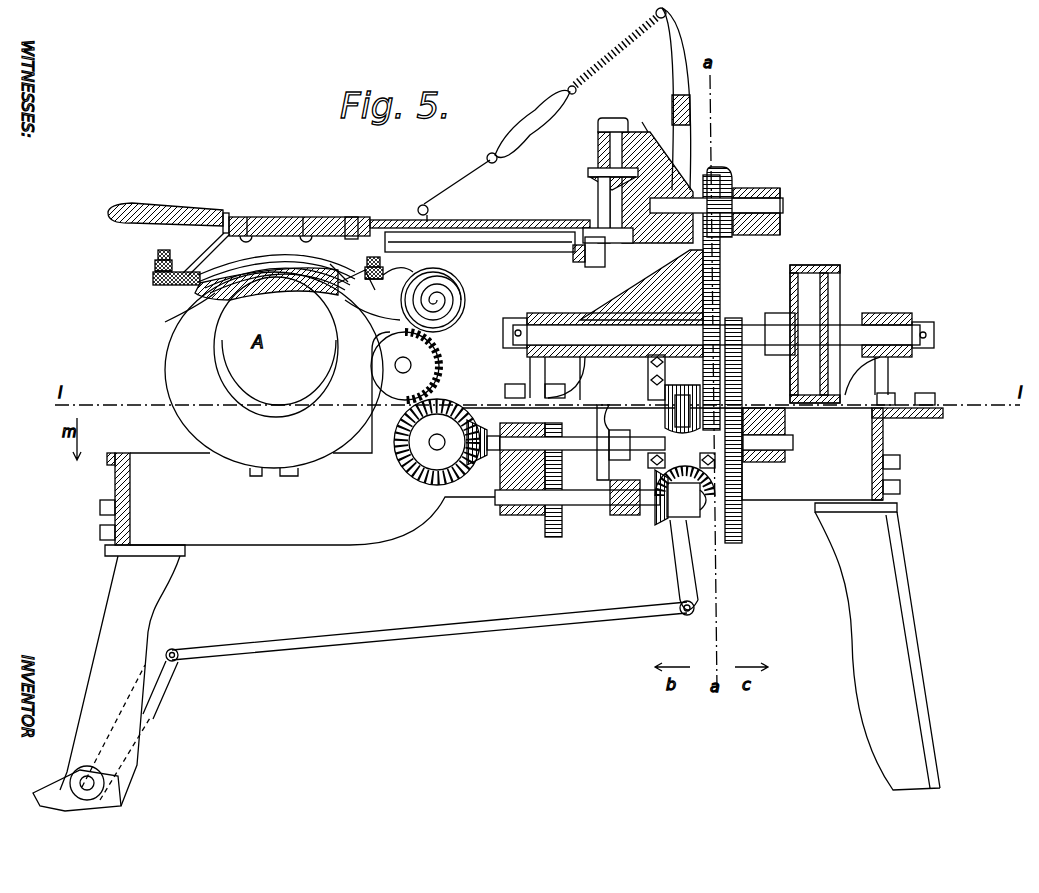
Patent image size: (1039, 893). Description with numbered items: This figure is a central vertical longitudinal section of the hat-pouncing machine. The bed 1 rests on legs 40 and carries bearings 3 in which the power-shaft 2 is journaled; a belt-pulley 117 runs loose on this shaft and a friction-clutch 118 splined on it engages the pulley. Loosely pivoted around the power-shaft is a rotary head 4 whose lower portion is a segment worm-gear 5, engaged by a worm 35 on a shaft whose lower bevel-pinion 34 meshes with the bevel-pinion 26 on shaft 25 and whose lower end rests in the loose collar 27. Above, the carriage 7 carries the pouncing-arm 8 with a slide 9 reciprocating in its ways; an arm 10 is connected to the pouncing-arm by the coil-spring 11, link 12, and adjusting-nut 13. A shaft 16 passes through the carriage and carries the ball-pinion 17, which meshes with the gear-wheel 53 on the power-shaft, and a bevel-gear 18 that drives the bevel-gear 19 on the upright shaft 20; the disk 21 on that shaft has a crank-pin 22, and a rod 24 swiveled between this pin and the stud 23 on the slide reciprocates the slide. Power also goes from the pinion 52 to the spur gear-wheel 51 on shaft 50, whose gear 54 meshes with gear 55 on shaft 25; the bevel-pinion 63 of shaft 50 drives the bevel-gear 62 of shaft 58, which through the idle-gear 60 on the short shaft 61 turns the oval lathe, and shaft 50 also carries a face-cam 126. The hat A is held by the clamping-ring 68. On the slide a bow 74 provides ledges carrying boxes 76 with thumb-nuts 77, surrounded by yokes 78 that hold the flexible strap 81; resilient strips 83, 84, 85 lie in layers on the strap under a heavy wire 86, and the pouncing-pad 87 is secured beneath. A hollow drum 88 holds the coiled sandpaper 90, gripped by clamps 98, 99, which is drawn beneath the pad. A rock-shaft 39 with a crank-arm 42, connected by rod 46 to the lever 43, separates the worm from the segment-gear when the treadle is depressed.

The bed 1 is at (521, 475).
The power-shaft 2 is at (716, 334).
The bearings 3 is at (880, 318).
The rotary head 4 is at (612, 300).
The segment worm-gear 5 is at (650, 392).
The carriage 7 is at (633, 128).
The pouncing-arm 8 is at (352, 218).
The slide 9 is at (255, 218).
The arm 10 is at (690, 52).
The coil-spring 11 is at (608, 53).
The link 12 is at (455, 187).
The adjusting-nut 13 is at (545, 108).
The shaft 16 is at (752, 198).
The ball-pinion 17 is at (715, 167).
The bevel-gear 18 is at (655, 160).
The bevel-gear 19 is at (590, 168).
The upright shaft 20 is at (602, 135).
The disk 21 is at (628, 243).
The crank-pin 22 is at (590, 237).
The stud 23 is at (340, 218).
The rod 24 is at (500, 252).
The shaft 25 is at (600, 508).
The bevel-pinion 26 is at (655, 522).
The collar 27 is at (685, 491).
The bevel-pinion 34 is at (712, 510).
The worm 35 is at (670, 416).
The rock-shaft 39 is at (101, 738).
The legs 40 is at (140, 748).
The crank-arm 42 is at (162, 686).
The lever 43 is at (672, 570).
The rod 46 is at (460, 627).
The shaft 50 is at (646, 439).
The spur gear-wheel 51 is at (745, 480).
The pinion 52 is at (738, 312).
The gear-wheel 53 is at (703, 278).
The gear 54 is at (540, 418).
The gear 55 is at (545, 530).
The shaft 58 is at (433, 447).
The idle-gear 60 is at (440, 378).
The short shaft 61 is at (412, 365).
The bevel-gear 62 is at (410, 478).
The bevel-pinion 63 is at (478, 420).
The clamping-ring 68 is at (274, 374).
The bow 74 is at (215, 250).
The boxes 76 is at (155, 262).
The thumb-nuts 77 is at (153, 267).
The yokes 78 is at (158, 250).
The flexible strap 81 is at (340, 290).
The flexible resilient strip 83 is at (330, 265).
The flexible resilient strip 84 is at (276, 268).
The flexible resilient strip 85 is at (263, 268).
The heavy wire 86 is at (232, 262).
The pouncing-pad 87 is at (178, 286).
The hollow drum 88 is at (416, 262).
The sandpaper 90 is at (468, 272).
The clamp 98 is at (468, 300).
The clamp 99 is at (372, 314).
The belt-pulley 117 is at (826, 265).
The friction-clutch 118 is at (772, 313).
The face-cam 126 is at (596, 405).